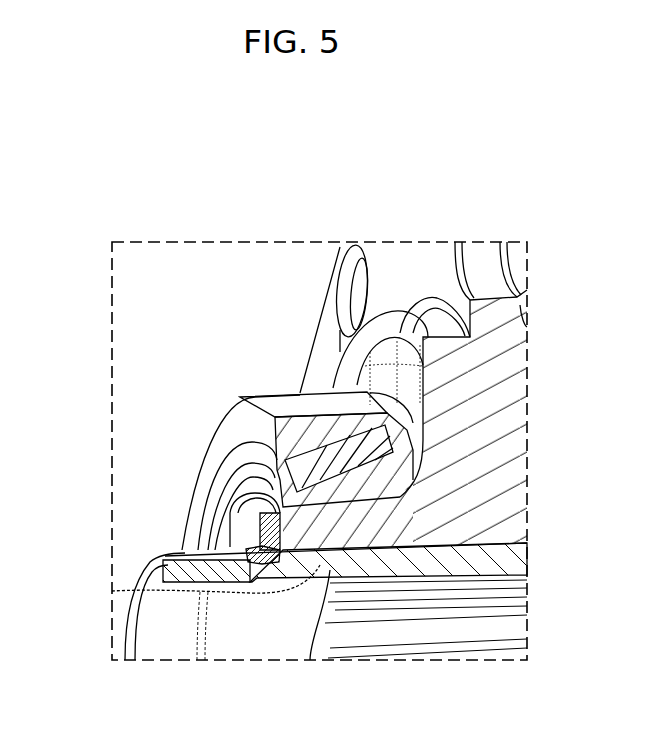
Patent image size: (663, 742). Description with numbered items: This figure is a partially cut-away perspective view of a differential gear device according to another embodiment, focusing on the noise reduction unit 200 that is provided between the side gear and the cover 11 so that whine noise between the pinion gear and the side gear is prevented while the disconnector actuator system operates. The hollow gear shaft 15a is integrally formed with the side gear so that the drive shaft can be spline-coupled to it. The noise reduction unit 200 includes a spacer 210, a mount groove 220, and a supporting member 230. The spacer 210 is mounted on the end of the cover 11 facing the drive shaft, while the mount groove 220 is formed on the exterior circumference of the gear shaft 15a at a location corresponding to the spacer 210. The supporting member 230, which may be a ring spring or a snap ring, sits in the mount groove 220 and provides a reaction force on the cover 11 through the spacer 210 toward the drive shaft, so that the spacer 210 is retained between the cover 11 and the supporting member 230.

The cover 11 is at (497, 392).
The gear shaft 15a is at (303, 570).
The noise reduction unit 200 is at (55, 505).
The spacer 210 is at (237, 523).
The mount groove 220 is at (205, 592).
The supporting member 230 is at (233, 540).